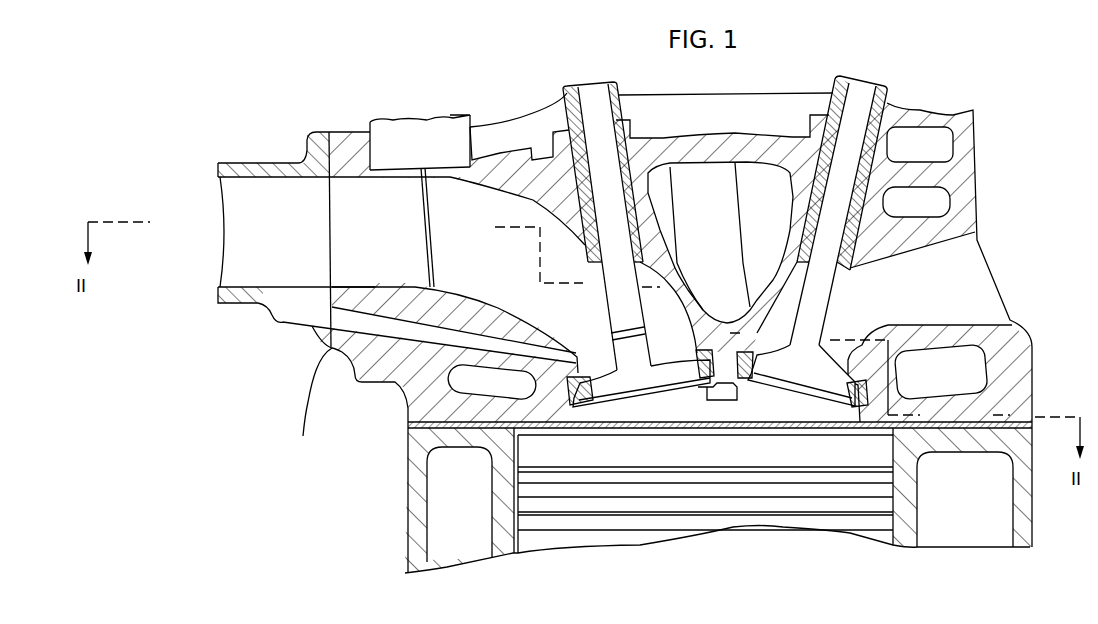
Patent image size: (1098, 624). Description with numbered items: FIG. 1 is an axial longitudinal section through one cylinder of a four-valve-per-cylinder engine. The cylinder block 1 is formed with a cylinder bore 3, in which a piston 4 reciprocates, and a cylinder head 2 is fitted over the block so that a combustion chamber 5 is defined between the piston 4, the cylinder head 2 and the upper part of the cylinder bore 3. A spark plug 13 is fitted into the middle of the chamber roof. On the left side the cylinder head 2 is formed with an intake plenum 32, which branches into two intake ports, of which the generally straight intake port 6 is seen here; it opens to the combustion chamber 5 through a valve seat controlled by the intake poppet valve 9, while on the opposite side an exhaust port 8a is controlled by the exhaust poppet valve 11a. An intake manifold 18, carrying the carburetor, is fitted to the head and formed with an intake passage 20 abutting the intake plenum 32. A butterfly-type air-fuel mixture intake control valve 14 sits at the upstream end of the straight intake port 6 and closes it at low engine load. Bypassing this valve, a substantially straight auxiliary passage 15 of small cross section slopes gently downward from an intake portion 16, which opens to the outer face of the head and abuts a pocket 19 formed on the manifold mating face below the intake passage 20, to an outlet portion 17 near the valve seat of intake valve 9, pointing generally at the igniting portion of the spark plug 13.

The cylinder block 1 is at (1018, 502).
The cylinder head 2 is at (1012, 380).
The cylinder bore 3 is at (882, 507).
The piston 4 is at (808, 520).
The combustion chamber 5 is at (698, 407).
The intake port 6 is at (484, 212).
The exhaust port 8a is at (968, 272).
The intake poppet valve 9 is at (616, 301).
The exhaust poppet valve 11a is at (810, 314).
The spark plug 13 is at (718, 392).
The air-fuel mixture intake control valve 14 is at (432, 250).
The auxiliary passage 15 is at (305, 432).
The intake portion 16 is at (315, 337).
The outlet portion 17 is at (605, 395).
The intake manifold 18 is at (258, 170).
The pocket 19 is at (262, 330).
The intake passage 20 is at (245, 235).
The intake plenum 32 is at (350, 207).